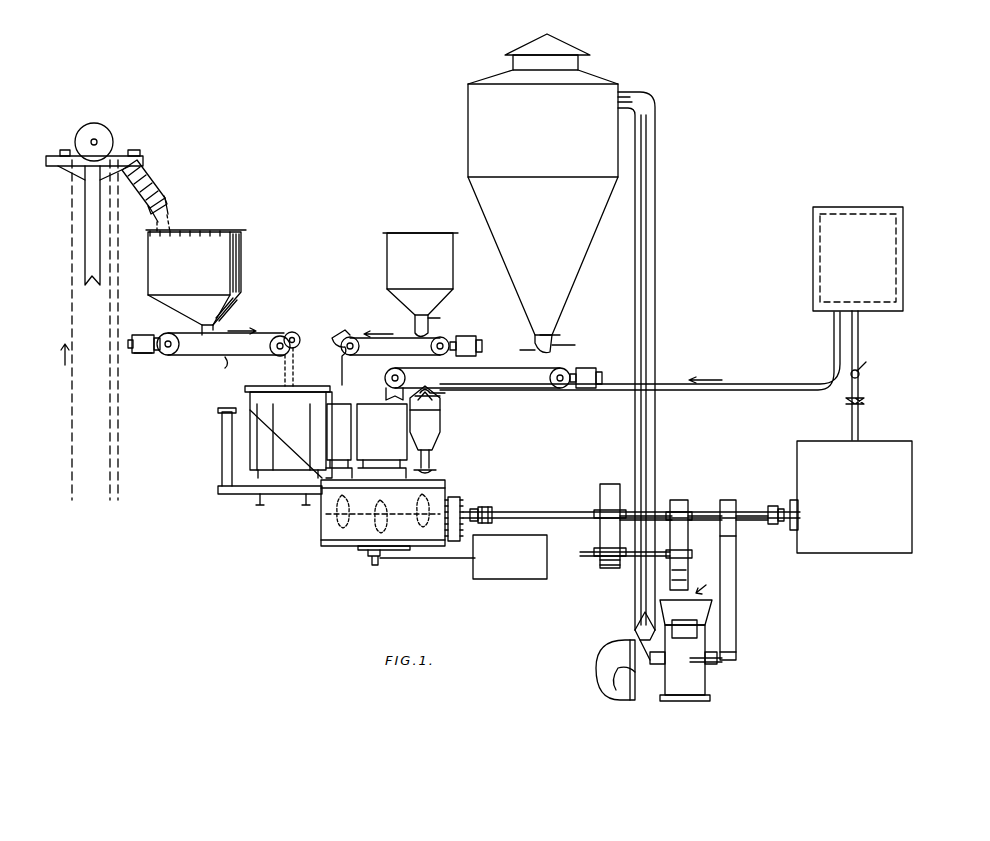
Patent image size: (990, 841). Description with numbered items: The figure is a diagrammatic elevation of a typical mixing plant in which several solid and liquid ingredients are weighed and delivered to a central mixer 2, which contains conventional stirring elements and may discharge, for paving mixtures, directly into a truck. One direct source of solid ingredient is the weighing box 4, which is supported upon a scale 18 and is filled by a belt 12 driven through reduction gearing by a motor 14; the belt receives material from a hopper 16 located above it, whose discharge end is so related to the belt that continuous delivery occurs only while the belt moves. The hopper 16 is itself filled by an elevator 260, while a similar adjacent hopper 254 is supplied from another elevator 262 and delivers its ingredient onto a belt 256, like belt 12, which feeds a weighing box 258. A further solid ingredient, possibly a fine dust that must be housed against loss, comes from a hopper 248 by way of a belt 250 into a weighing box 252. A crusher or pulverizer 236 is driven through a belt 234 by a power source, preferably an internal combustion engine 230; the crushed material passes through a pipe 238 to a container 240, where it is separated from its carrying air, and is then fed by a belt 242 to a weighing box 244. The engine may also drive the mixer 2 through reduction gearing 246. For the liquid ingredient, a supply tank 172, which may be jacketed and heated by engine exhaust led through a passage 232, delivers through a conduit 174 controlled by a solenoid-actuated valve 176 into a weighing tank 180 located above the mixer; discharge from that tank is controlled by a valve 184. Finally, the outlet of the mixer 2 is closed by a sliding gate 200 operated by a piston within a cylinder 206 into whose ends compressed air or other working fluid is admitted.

The mixer 2 is at (325, 532).
The weighing box 4 is at (288, 432).
The belt 12 is at (228, 358).
The motor 14 is at (140, 334).
The hopper 16 is at (210, 242).
The scale 18 is at (284, 486).
The supply tank 172 is at (894, 256).
The conduit 174 is at (760, 382).
The valve 176 is at (442, 398).
The weighing tank 180 is at (425, 427).
The valve 184 is at (438, 474).
The sliding gate 200 is at (366, 551).
The cylinder 206 is at (510, 568).
The internal combustion engine 230 is at (914, 465).
The passage 232 is at (860, 350).
The belt 234 is at (738, 594).
The crusher or pulverizer 236 is at (698, 684).
The pipe 238 is at (660, 158).
The container 240 is at (478, 140).
The belt 242 is at (496, 367).
The weighing box 244 is at (382, 441).
The reduction gearing 246 is at (612, 497).
The hopper 248 is at (414, 242).
The belt 250 is at (352, 337).
The weighing box 252 is at (339, 441).
The hopper 254 is at (238, 250).
The belt 256 is at (255, 334).
The weighing box 258 is at (296, 384).
The elevator 260 is at (146, 186).
The elevator 262 is at (160, 197).